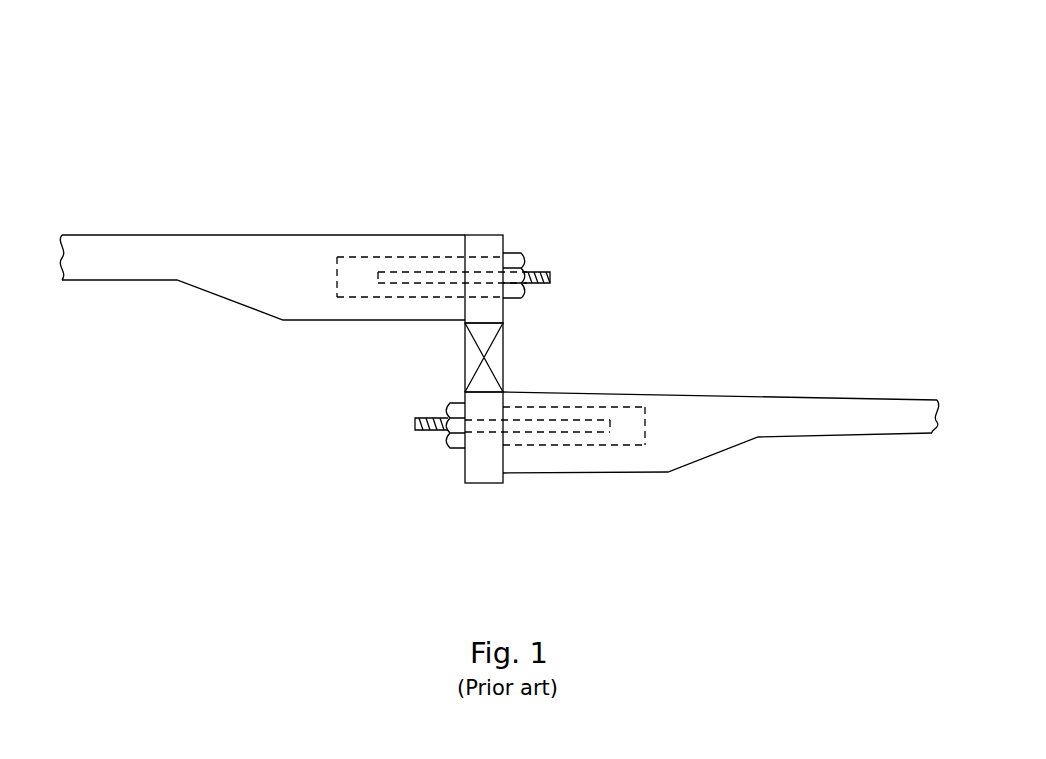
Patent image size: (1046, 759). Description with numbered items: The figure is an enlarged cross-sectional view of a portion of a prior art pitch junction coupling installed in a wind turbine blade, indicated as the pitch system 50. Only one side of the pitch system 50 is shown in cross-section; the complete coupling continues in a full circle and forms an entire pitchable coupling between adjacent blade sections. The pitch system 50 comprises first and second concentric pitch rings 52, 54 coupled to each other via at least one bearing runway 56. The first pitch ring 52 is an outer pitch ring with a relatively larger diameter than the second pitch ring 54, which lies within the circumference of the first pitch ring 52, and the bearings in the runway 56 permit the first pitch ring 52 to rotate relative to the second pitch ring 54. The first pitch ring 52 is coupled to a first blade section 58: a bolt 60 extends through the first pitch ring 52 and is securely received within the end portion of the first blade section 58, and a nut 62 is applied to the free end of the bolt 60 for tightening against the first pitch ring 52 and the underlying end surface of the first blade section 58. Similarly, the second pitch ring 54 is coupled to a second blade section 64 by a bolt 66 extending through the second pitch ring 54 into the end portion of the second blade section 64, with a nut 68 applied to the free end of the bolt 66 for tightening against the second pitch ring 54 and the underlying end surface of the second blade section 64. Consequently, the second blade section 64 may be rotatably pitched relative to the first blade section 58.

The pitch system 50 is at (310, 105).
The first pitch ring 52 is at (483, 245).
The second pitch ring 54 is at (473, 465).
The bearing runway 56 is at (473, 367).
The first blade section 58 is at (300, 238).
The bolt 60 is at (552, 273).
The nut 62 is at (515, 252).
The second blade section 64 is at (685, 445).
The bolt 66 is at (415, 425).
The nut 68 is at (448, 452).